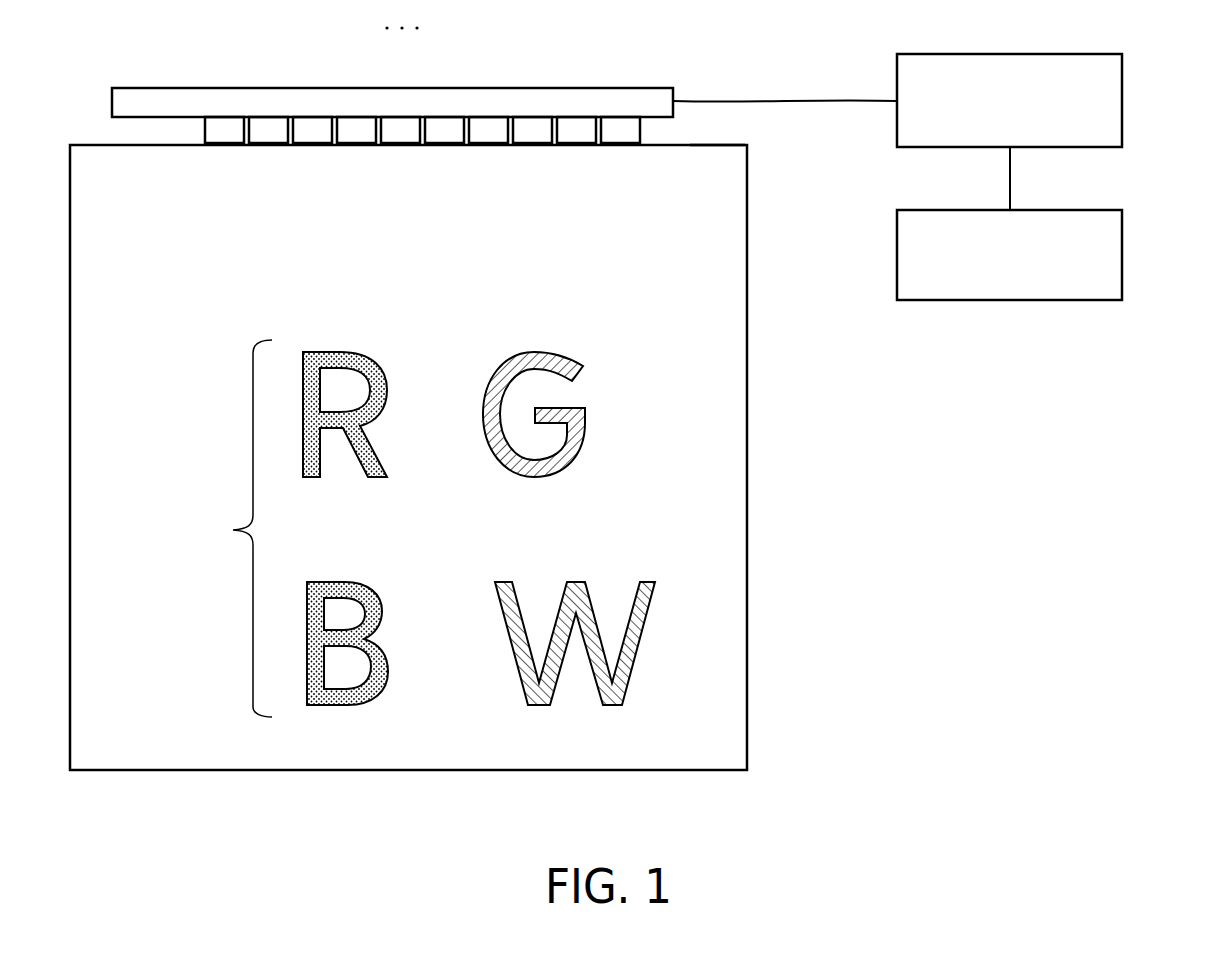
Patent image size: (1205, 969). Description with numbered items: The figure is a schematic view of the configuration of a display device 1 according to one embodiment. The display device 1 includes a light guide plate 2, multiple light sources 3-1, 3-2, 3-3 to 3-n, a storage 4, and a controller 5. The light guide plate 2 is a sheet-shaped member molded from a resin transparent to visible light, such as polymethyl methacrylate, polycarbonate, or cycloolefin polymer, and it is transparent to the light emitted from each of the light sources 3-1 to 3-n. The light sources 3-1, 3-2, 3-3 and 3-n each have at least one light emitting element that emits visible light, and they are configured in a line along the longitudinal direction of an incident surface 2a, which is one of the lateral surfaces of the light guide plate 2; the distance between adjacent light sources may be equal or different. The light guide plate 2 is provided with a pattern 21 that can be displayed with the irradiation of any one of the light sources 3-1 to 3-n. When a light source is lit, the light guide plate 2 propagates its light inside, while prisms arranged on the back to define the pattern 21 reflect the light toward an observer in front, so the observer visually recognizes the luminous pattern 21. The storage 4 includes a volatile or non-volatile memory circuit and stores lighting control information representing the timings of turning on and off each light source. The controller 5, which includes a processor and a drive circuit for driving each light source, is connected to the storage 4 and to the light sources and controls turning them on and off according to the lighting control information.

The display device 1 is at (880, 767).
The light guide plate 2 is at (747, 225).
The incident surface 2a is at (717, 145).
The light source 3-1 is at (225, 128).
The light source 3-2 is at (267, 128).
The light source 3-3 is at (313, 128).
The light source 3-n is at (623, 128).
The storage 4 is at (1122, 255).
The controller 5 is at (1122, 100).
The pattern 21 is at (429, 528).